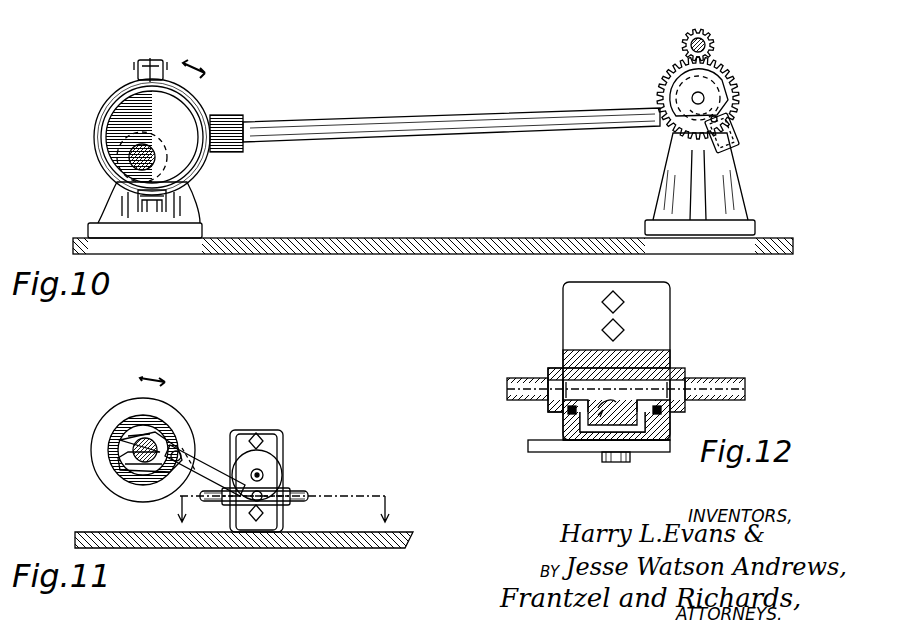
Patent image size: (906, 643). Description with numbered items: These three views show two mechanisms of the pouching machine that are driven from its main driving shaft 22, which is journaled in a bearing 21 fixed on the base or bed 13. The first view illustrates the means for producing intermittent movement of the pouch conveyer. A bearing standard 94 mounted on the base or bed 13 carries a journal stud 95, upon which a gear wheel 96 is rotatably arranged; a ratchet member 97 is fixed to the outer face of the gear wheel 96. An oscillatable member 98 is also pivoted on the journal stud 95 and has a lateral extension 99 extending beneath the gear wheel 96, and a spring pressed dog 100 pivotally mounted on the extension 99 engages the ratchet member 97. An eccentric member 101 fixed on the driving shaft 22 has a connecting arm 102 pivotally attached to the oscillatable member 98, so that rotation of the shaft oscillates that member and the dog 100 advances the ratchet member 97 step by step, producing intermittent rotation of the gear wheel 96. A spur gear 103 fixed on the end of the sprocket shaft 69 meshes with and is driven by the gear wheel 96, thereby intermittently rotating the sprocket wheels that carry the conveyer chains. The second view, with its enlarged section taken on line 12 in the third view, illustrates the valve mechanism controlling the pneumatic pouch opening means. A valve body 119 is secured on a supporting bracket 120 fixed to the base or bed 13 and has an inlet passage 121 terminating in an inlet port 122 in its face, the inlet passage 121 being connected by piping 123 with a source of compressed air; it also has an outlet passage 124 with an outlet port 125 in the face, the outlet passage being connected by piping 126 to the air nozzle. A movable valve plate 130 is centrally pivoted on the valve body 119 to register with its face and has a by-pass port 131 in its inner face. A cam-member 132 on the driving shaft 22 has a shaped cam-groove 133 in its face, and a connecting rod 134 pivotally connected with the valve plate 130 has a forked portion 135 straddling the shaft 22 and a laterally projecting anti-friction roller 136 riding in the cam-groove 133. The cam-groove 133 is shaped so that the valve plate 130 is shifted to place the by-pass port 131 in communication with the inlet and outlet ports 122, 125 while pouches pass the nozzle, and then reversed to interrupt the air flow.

In FIG. 11, the section line 12— 12 is at (279, 513).
In FIG. 10, the base or bed 13 is at (312, 239).
In FIG. 11, the base or bed 13 is at (240, 550).
In FIG. 10, the bearing 21 is at (110, 195).
In FIG. 10, the main driving shaft 22 is at (120, 153).
In FIG. 11, the main driving shaft 22 is at (110, 458).
In FIG. 10, the shaft 69 is at (708, 44).
In FIG. 10, the bearing standard 94 is at (720, 175).
In FIG. 10, the journal stud 95 is at (712, 86).
In FIG. 10, the gear wheel 96 is at (738, 96).
In FIG. 10, the ratchet member 97 is at (702, 95).
In FIG. 10, the oscillatable member 98 is at (732, 90).
In FIG. 10, the lateral extension 99 is at (737, 136).
In FIG. 10, the spring pressed dog 100 is at (722, 118).
In FIG. 10, the eccentric member 101 is at (205, 108).
In FIG. 10, the connecting arm 102 is at (390, 123).
In FIG. 10, the spur gear 103 is at (715, 37).
In FIG. 11, the valve body 119 is at (278, 441).
In FIG. 12, the valve body 119 is at (670, 360).
In FIG. 11, the supporting bracket 120 is at (278, 524).
In FIG. 12, the supporting bracket 120 is at (640, 352).
In FIG. 12, the inlet passage 121 is at (565, 413).
In FIG. 12, the inlet port 122 is at (575, 448).
In FIG. 11, the piping 123 is at (210, 504).
In FIG. 12, the piping 123 is at (524, 380).
In FIG. 12, the outlet passage 124 is at (686, 376).
In FIG. 12, the outlet port 125 is at (640, 446).
In FIG. 11, the piping 126 is at (300, 494).
In FIG. 12, the piping 126 is at (742, 386).
In FIG. 11, the movable valve plate 130 is at (272, 472).
In FIG. 12, the movable valve plate 130 is at (662, 441).
In FIG. 12, the by-pass port 131 is at (606, 463).
In FIG. 11, the cam-member 132 is at (116, 404).
In FIG. 11, the cam-groove 133 is at (118, 440).
In FIG. 11, the connecting rod 134 is at (200, 470).
In FIG. 12, the connecting rod 134 is at (530, 448).
In FIG. 11, the bifurcated or forked portion 135 is at (140, 416).
In FIG. 11, the anti-friction roller 136 is at (184, 440).